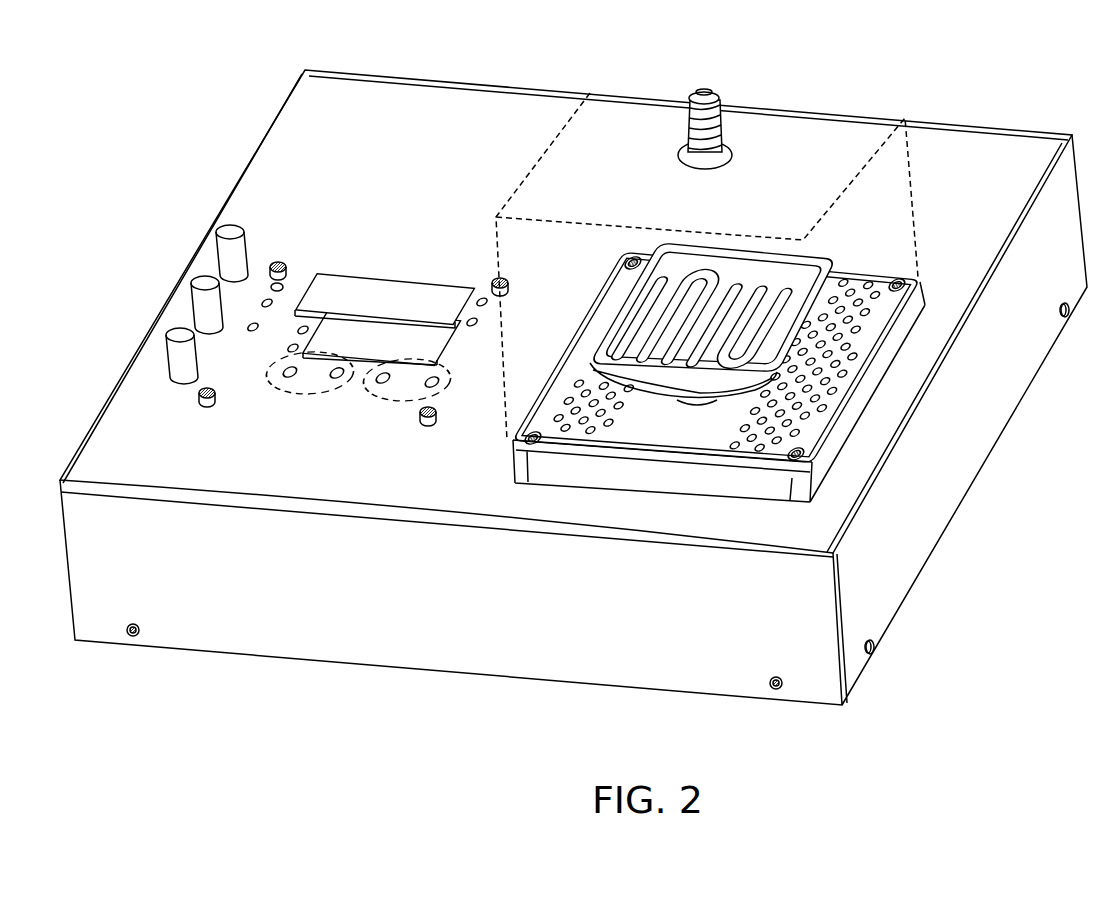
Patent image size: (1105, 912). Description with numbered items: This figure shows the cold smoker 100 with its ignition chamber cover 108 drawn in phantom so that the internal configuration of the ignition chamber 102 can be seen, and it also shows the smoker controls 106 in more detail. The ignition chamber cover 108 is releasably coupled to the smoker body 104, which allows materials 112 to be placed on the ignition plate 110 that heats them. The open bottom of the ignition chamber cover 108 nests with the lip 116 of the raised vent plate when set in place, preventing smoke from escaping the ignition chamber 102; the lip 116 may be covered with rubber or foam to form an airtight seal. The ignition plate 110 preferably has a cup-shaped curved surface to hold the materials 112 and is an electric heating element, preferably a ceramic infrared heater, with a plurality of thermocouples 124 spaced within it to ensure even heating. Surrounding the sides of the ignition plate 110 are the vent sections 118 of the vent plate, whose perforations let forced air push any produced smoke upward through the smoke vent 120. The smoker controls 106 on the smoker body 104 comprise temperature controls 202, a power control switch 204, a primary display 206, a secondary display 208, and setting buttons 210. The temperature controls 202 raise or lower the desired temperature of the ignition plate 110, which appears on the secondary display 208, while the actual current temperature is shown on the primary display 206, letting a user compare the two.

The smoker 100 is at (105, 180).
The ignition chamber 102 is at (783, 123).
The smoker body 104 is at (317, 86).
The smoker controls 106 is at (453, 425).
The ignition chamber cover 108 is at (525, 170).
The ignition plate 110 is at (662, 383).
The materials 112 is at (805, 304).
The lip 116 is at (867, 392).
The vent sections 118 is at (568, 435).
The smoke vent 120 is at (701, 86).
The thermocouples 124 is at (788, 267).
The temperature controls 202 is at (443, 393).
The power control switch 204 is at (178, 318).
The primary display 206 is at (322, 278).
The secondary display 208 is at (368, 340).
The setting buttons 210 is at (265, 375).